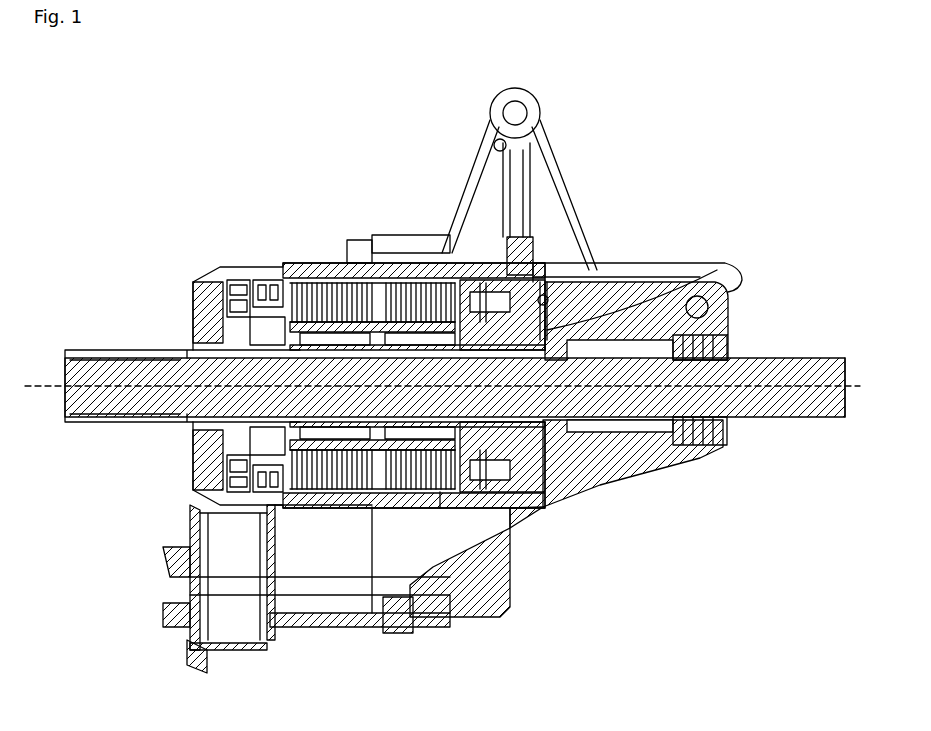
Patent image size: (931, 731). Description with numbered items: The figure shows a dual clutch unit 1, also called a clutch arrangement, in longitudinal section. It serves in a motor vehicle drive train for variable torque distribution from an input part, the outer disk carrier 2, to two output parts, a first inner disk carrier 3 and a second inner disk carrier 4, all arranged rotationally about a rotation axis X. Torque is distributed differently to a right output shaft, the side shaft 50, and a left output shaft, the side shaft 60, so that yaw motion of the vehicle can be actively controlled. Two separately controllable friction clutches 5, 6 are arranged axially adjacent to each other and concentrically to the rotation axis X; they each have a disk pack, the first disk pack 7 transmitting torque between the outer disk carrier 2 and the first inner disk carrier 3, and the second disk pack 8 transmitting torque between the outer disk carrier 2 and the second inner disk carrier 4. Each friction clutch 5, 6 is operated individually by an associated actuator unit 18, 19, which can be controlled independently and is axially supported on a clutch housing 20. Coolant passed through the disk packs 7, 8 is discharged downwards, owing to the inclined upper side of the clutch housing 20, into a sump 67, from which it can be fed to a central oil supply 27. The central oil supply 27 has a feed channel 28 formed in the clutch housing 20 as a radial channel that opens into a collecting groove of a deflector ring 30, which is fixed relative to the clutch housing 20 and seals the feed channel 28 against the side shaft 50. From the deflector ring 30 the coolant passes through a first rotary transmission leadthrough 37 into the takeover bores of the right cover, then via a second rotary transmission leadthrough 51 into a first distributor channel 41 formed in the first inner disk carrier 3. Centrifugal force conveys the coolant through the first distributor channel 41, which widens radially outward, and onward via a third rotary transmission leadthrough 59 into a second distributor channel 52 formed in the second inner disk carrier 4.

The dual clutch unit 1 is at (251, 151).
The outer disk carrier 2 is at (378, 278).
The first inner disk carrier 3 is at (420, 278).
The second inner disk carrier 4 is at (292, 280).
The friction clutch 5 is at (503, 250).
The friction clutch 6 is at (265, 282).
The first disk pack 7 is at (500, 290).
The second disk pack 8 is at (318, 263).
The actuator unit 18 is at (498, 280).
The actuator unit 19 is at (215, 290).
The clutch housing 20 is at (680, 280).
The central oil supply 27 is at (560, 295).
The feed channel 28 is at (705, 290).
The deflector ring 30 is at (545, 437).
The first rotary transmission leadthrough 37 is at (535, 432).
The first distributor channel 41 is at (447, 432).
The side shaft 50 is at (762, 420).
The second rotary transmission leadthrough 51 is at (470, 430).
The second distributor channel 52 is at (297, 457).
The third rotary transmission leadthrough 59 is at (375, 432).
The side shaft 60 is at (105, 408).
The sump 67 is at (418, 559).
The rotation axis X is at (60, 395).